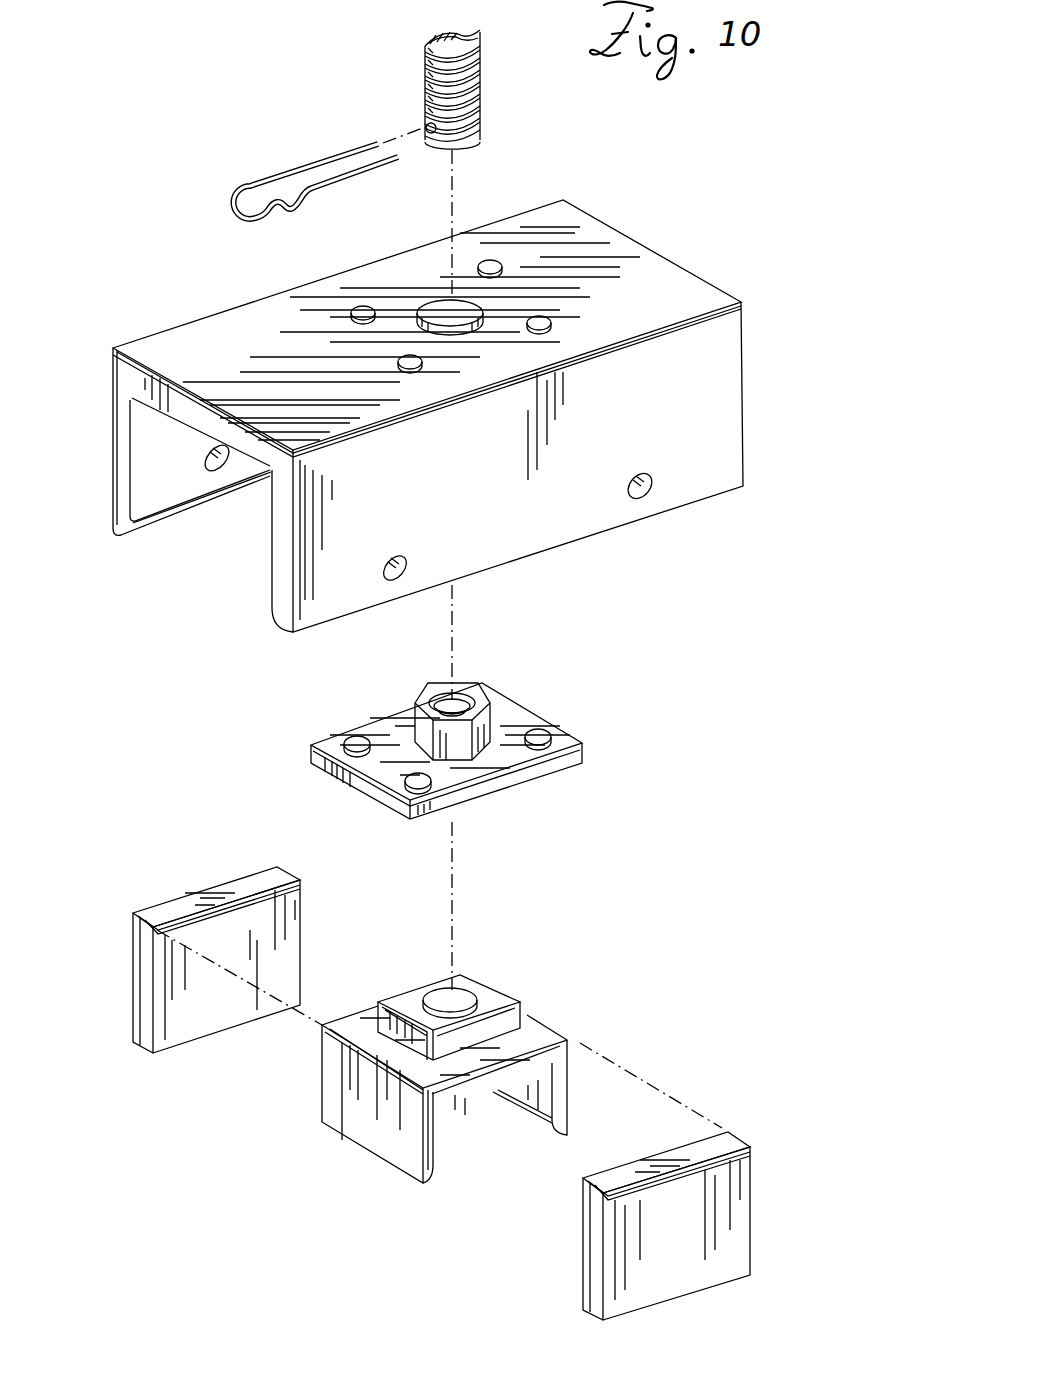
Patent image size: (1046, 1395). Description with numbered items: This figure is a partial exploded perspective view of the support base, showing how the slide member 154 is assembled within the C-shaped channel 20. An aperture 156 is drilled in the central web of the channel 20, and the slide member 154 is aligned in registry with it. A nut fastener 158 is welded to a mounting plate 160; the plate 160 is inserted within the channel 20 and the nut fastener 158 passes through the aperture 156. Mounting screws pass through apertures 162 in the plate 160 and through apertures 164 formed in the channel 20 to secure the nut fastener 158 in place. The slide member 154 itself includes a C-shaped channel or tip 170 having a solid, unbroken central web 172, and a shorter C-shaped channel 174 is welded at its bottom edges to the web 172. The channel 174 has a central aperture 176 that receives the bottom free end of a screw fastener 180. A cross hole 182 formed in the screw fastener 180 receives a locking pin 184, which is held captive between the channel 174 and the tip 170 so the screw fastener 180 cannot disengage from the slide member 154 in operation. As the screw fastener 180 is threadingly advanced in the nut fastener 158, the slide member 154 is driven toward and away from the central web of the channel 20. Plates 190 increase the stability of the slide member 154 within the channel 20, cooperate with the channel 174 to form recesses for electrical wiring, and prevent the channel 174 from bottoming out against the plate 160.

The channel 20 is at (660, 262).
The slide member 154 is at (431, 1069).
The aperture 156 is at (432, 300).
The nut fastener 158 is at (463, 683).
The mounting plate 160 is at (585, 750).
The apertures 162 is at (545, 735).
The apertures 164 is at (497, 262).
The tip 170 is at (335, 1113).
The central web 172 is at (343, 1020).
The C-shaped channel 174 is at (513, 1018).
The central aperture 176 is at (458, 1003).
The screw fastener 180 is at (427, 50).
The cross hole 182 is at (437, 135).
The locking pin 184 is at (262, 188).
The plates 190 is at (293, 937).